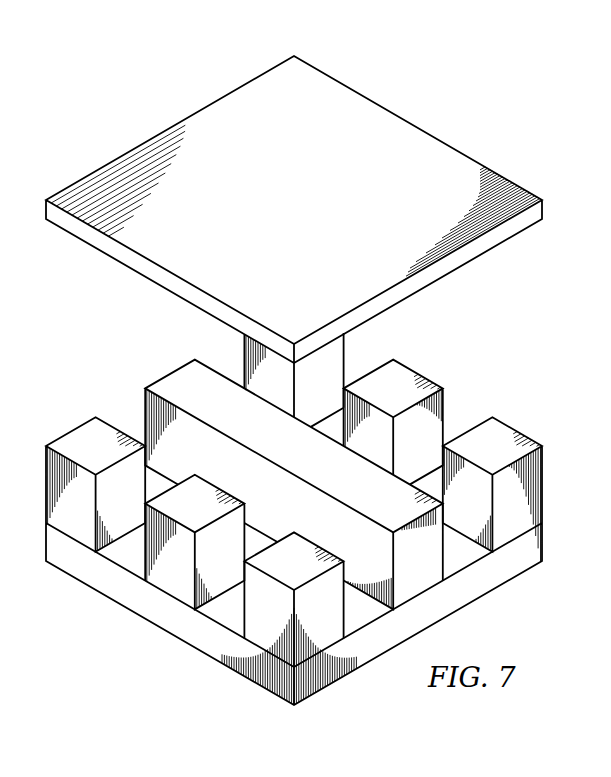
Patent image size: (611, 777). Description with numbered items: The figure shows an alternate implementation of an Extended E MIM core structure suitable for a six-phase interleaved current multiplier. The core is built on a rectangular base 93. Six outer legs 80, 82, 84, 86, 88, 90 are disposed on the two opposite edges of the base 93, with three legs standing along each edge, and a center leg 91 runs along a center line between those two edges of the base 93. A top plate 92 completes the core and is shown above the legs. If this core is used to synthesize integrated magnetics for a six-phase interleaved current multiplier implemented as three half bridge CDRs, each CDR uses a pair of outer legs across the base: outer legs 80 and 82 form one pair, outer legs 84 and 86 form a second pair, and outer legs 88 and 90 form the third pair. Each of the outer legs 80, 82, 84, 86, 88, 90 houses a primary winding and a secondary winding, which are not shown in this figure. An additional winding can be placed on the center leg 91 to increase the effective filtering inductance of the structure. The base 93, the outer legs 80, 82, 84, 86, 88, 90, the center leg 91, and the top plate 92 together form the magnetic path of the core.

The outer leg 80 is at (88, 437).
The outer leg 82 is at (244, 357).
The outer leg 84 is at (203, 490).
The outer leg 86 is at (401, 376).
The outer leg 88 is at (302, 547).
The outer leg 90 is at (500, 433).
The center leg 91 is at (197, 373).
The top plate 92 is at (447, 153).
The rectangular base 93 is at (507, 568).